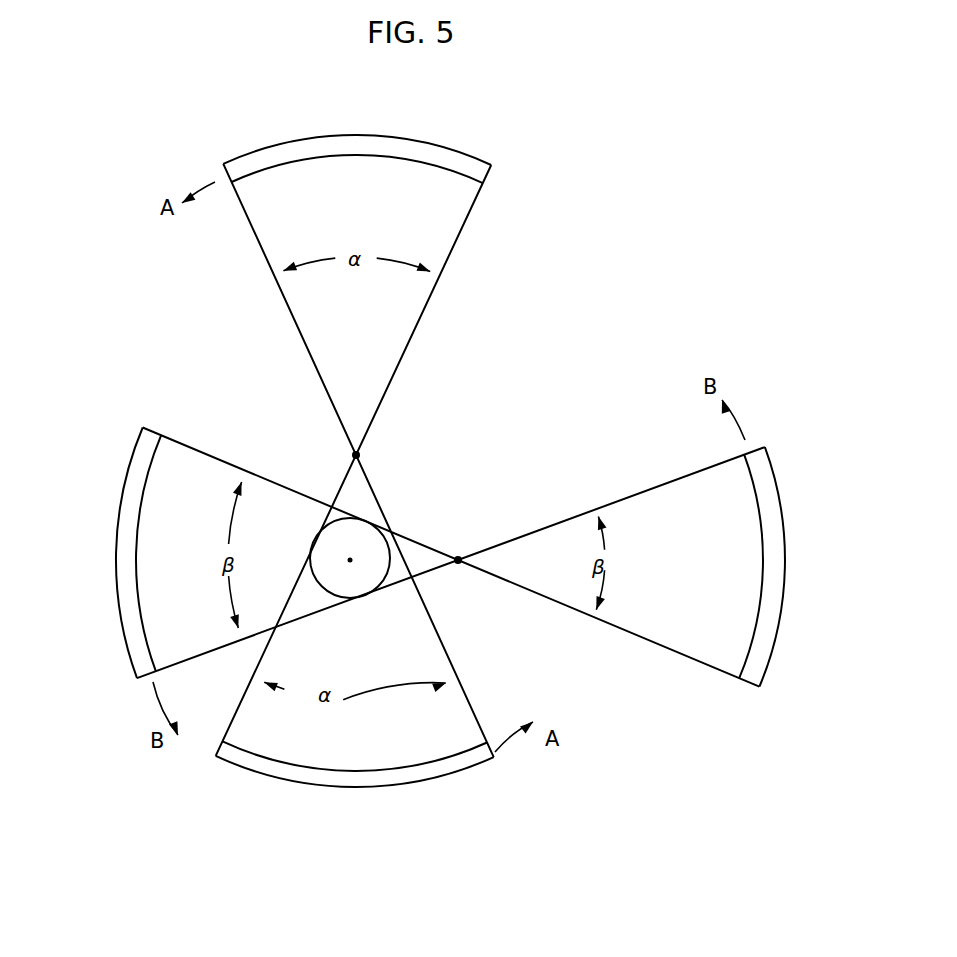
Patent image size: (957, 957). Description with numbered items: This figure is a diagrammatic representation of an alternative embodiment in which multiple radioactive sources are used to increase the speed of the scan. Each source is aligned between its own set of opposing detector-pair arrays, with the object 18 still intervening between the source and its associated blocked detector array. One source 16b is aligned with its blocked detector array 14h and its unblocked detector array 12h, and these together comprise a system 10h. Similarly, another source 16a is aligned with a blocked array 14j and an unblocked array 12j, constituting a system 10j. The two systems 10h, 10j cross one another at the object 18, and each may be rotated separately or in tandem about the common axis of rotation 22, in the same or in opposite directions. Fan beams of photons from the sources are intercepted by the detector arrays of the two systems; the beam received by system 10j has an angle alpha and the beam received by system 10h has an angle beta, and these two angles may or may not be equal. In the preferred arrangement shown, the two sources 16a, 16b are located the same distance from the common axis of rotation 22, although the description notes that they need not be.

The system 10j is at (440, 297).
The unblocked detector array 12j is at (394, 134).
The blocked detector array 14j is at (333, 788).
The system 10h is at (657, 483).
The unblocked detector array 12h is at (775, 472).
The blocked detector array 14h is at (120, 628).
The source 16a is at (350, 452).
The source 16b is at (458, 562).
The object 18 is at (345, 532).
The common axis of rotation 22 is at (352, 558).